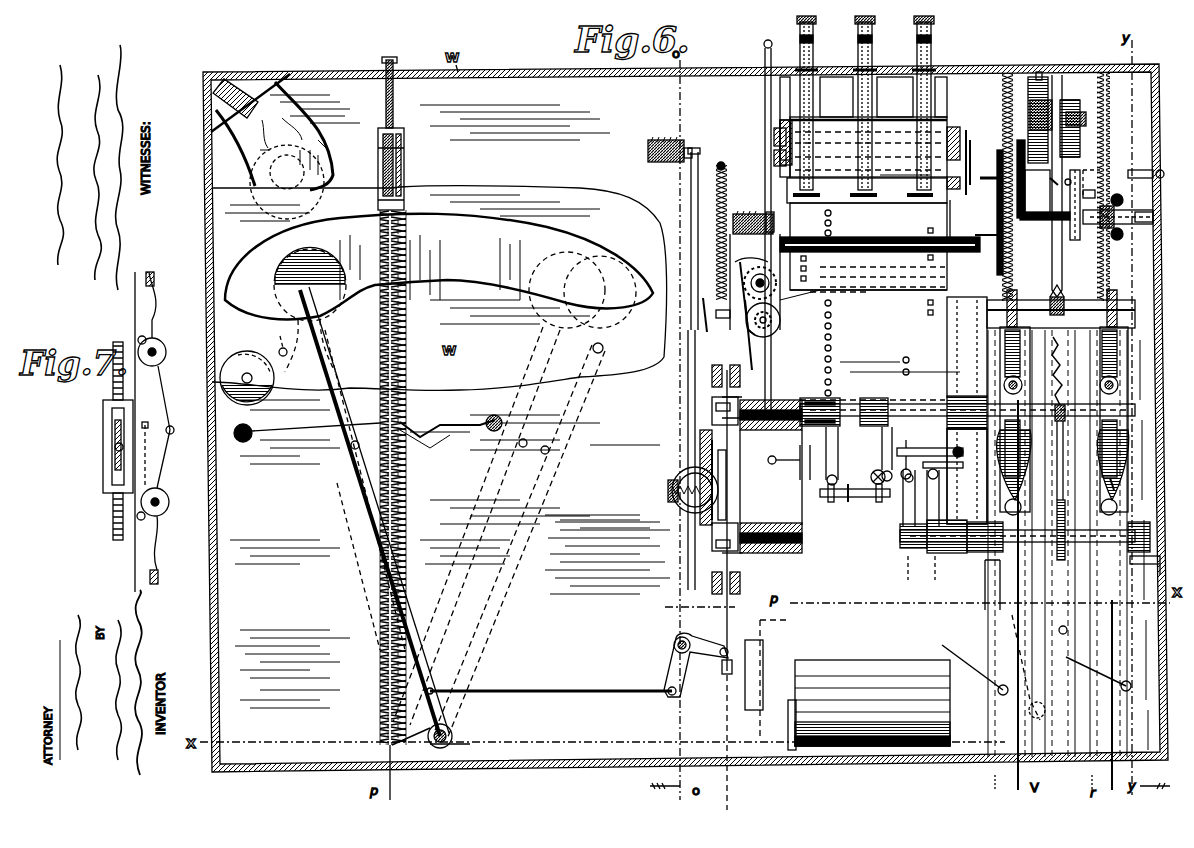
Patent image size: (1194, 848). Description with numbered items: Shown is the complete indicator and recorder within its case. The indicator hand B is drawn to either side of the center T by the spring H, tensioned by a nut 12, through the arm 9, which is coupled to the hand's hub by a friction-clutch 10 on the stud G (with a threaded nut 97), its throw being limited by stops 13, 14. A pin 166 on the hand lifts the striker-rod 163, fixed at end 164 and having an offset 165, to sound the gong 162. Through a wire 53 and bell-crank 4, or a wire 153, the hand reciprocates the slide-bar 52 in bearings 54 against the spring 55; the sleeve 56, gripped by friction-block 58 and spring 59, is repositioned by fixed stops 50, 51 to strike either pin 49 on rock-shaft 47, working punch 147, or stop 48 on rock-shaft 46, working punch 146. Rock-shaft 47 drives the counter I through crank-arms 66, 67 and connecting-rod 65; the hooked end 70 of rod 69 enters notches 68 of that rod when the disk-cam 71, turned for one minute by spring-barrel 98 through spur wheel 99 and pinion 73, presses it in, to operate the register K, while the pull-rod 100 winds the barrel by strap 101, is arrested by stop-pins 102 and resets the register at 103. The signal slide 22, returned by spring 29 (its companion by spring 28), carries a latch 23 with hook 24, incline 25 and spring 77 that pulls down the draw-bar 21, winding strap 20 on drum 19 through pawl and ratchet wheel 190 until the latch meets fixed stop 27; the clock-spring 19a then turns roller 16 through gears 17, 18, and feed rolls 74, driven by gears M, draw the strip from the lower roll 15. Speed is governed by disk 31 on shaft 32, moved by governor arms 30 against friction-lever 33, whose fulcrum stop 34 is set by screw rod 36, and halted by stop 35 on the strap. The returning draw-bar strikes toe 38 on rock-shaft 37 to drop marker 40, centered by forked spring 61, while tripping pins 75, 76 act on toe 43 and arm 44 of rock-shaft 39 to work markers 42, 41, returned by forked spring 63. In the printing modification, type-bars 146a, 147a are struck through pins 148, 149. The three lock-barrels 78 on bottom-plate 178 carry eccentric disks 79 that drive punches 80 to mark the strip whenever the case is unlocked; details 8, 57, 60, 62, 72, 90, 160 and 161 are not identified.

In FIG. 6, the bell-crank 4 is at (672, 660).
In FIG. 6, the piston rod 8 is at (394, 90).
In FIG. 6, the arm 9 is at (432, 745).
In FIG. 6, the friction-clutch 10 is at (470, 760).
In FIG. 6, the nut 12 is at (405, 160).
In FIG. 6, the stop 13 is at (280, 336).
In FIG. 6, the stop 14 is at (604, 352).
In FIG. 6, the lower roll 15 is at (798, 732).
In FIG. 6, the roller 16 is at (780, 128).
In FIG. 6, the gear 17 is at (998, 170).
In FIG. 6, the gear 18 is at (1051, 188).
In FIG. 6, the drum 19 is at (1065, 104).
In FIG. 6, the clock-spring 19a is at (1038, 100).
In FIG. 6, the pawl and ratchet wheel 190 is at (1072, 100).
In FIG. 6, the strap 20 is at (1054, 270).
In FIG. 6, the draw-bar 21 is at (1054, 298).
In FIG. 6, the slide 22 is at (1108, 300).
In FIG. 6, the latch-bar 23 is at (1005, 315).
In FIG. 6, the hook 24 is at (1097, 300).
In FIG. 6, the inclined edge 25 is at (1100, 445).
In FIG. 6, the fixed stop 27 is at (1026, 667).
In FIG. 6, the coiled spring 28 is at (998, 187).
In FIG. 6, the spring 29 is at (1114, 187).
In FIG. 6, the governor arms 30 is at (1112, 240).
In FIG. 6, the disk 31 is at (1081, 214).
In FIG. 6, the shaft 32 is at (1045, 224).
In FIG. 6, the friction-lever 33 is at (1118, 209).
In FIG. 6, the adjustable stop 34 is at (1090, 178).
In FIG. 6, the stop 35 is at (1033, 179).
In FIG. 6, the screw rod 36 is at (1136, 162).
In FIG. 6, the rock-shaft 37 is at (967, 412).
In FIG. 6, the toe 38 is at (1046, 436).
In FIG. 6, the rock-shaft 39 is at (900, 536).
In FIG. 6, the marker 40 is at (880, 458).
In FIG. 6, the marker 41 is at (903, 574).
In FIG. 6, the marker 42 is at (931, 574).
In FIG. 6, the toe 43 is at (980, 520).
In FIG. 6, the arm 44 is at (1156, 565).
In FIG. 6, the rock-shaft 46 is at (770, 404).
In FIG. 6, the rock-shaft 47 is at (771, 529).
In FIG. 6, the stop 48 is at (712, 402).
In FIG. 6, the pin 49 is at (712, 535).
In FIG. 6, the fixed stop 50 is at (748, 397).
In FIG. 6, the fixed stop 51 is at (750, 558).
In FIG. 7, the slide-bar 52 is at (112, 520).
In FIG. 6, the slide-bar 52 is at (690, 607).
In FIG. 6, the wire 53 is at (551, 684).
In FIG. 6, the bearings 54 is at (712, 370).
In FIG. 6, the coiled spring 55 is at (729, 224).
In FIG. 7, the contact device 56 is at (102, 440).
In FIG. 6, the contact device 56 is at (730, 472).
In FIG. 6, the sleeve 57 is at (700, 455).
In FIG. 6, the friction-block 58 is at (672, 472).
In FIG. 6, the coiled spring 59 is at (672, 490).
In FIG. 6, the pin 60 is at (775, 457).
In FIG. 6, the forked spring 61 is at (855, 501).
In FIG. 6, the pivot 62 is at (866, 482).
In FIG. 6, the forked spring 63 is at (930, 477).
In FIG. 6, the connecting-rod 65 is at (690, 193).
In FIG. 6, the crank-arm 66 is at (686, 568).
In FIG. 6, the crank-arm 67 is at (694, 160).
In FIG. 6, the notches 68 is at (726, 316).
In FIG. 6, the rod 69 is at (751, 254).
In FIG. 6, the hook-shaped end 70 is at (758, 334).
In FIG. 6, the disk-cam 71 is at (768, 336).
In FIG. 6, the rod 72 is at (872, 346).
In FIG. 6, the pinion 73 is at (880, 336).
In FIG. 6, the feed rolls 74 is at (880, 203).
In FIG. 6, the tripping pin 75 is at (985, 323).
In FIG. 6, the tripping pin 76 is at (702, 300).
In FIG. 6, the spring 77 is at (1118, 478).
In FIG. 6, the lock-barrels 78 is at (936, 105).
In FIG. 6, the eccentric disk 79 is at (867, 207).
In FIG. 6, the punch 80 is at (917, 197).
In FIG. 6, the cam 90 is at (316, 152).
In FIG. 6, the threaded nut 97 is at (818, 344).
In FIG. 6, the spring-barrel 98 is at (868, 273).
In FIG. 6, the spur wheel 99 is at (760, 282).
In FIG. 6, the pull-rod 100 is at (765, 52).
In FIG. 6, the winding-strap 101 is at (800, 290).
In FIG. 6, the stop-pins 102 is at (790, 318).
In FIG. 6, the connection to throw-off lever 103 is at (770, 212).
In FIG. 6, the punch 146 is at (800, 440).
In FIG. 7, the type-bar 146a is at (164, 400).
In FIG. 6, the punch 147 is at (800, 498).
In FIG. 7, the type-bar 147a is at (160, 462).
In FIG. 7, the pin 148 is at (138, 340).
In FIG. 7, the pin 149 is at (140, 540).
In FIG. 6, the wire 153 is at (728, 776).
In FIG. 7, the spring 160 is at (158, 572).
In FIG. 7, the spring 161 is at (158, 300).
In FIG. 6, the gong 162 is at (250, 404).
In FIG. 6, the striker-rod 163 is at (462, 424).
In FIG. 6, the fixed end 164 is at (500, 416).
In FIG. 6, the angular offset 165 is at (425, 436).
In FIG. 6, the pin 166 is at (352, 446).
In FIG. 6, the bottom-plate 178 is at (913, 181).
In FIG. 6, the hand of the indicator B is at (335, 310).
In FIG. 6, the stud G is at (452, 733).
In FIG. 6, the spring H is at (408, 477).
In FIG. 6, the mechanical counter I is at (666, 142).
In FIG. 6, the registering-device K is at (755, 264).
In FIG. 6, the gears M is at (996, 220).
In FIG. 6, the center of the sight-opening T is at (459, 226).